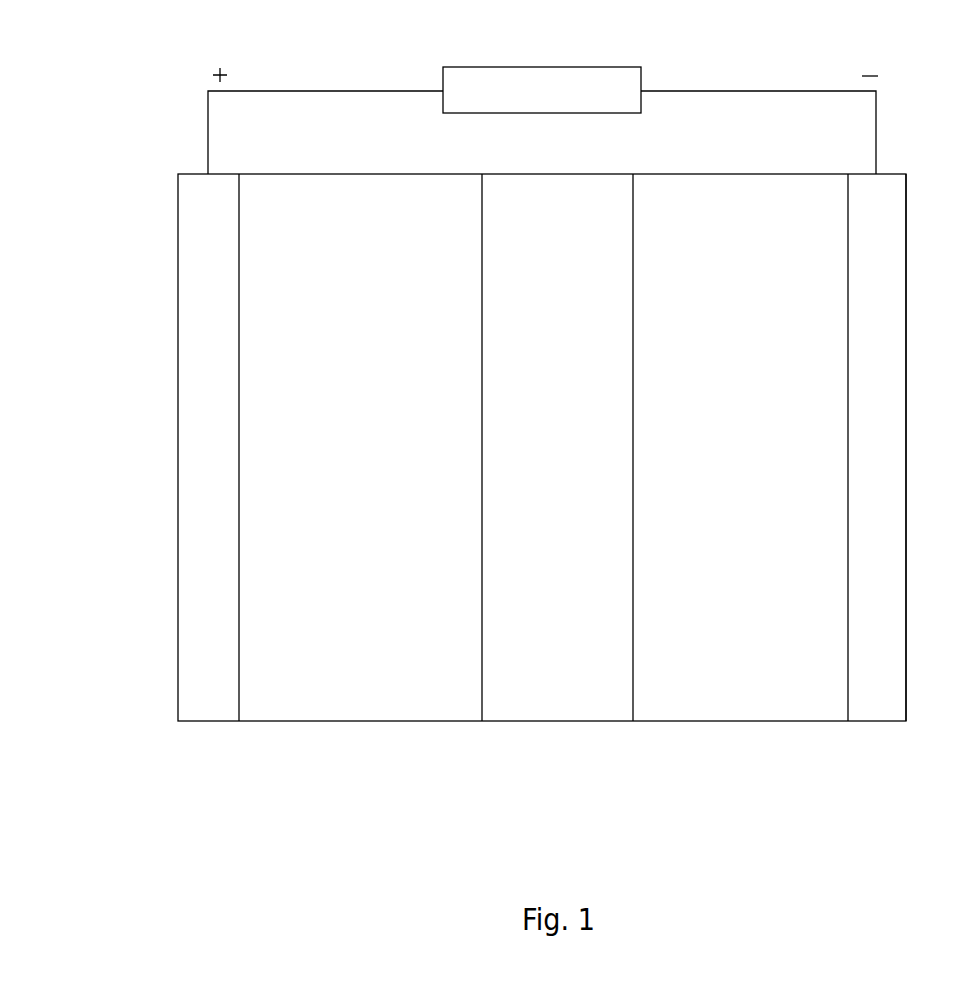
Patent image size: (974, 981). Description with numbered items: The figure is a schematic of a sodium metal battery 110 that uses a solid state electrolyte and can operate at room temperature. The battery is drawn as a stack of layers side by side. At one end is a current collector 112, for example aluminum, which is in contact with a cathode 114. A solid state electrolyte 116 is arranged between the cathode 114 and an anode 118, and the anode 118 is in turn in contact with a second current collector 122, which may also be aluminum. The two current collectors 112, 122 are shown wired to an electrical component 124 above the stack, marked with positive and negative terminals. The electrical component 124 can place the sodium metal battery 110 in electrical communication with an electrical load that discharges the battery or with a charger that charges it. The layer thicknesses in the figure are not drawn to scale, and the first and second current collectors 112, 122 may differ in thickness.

The sodium metal battery 110 is at (279, 742).
The current collector 112 is at (208, 675).
The cathode 114 is at (373, 675).
The solid state electrolyte 116 is at (558, 683).
The anode 118 is at (785, 683).
The current collector 122 is at (883, 683).
The electrical component 124 is at (618, 91).